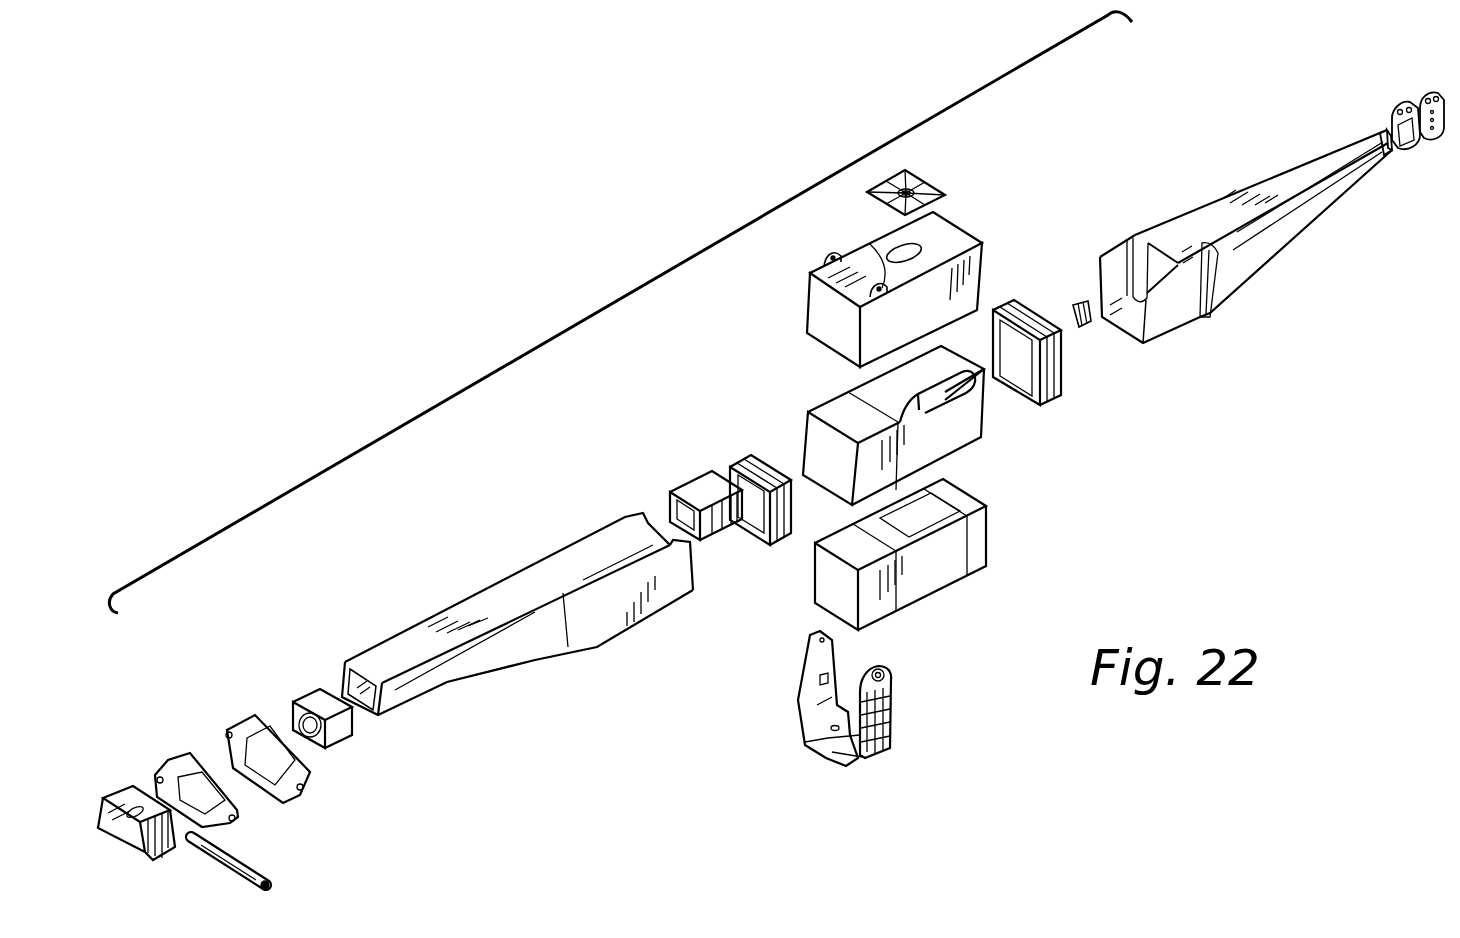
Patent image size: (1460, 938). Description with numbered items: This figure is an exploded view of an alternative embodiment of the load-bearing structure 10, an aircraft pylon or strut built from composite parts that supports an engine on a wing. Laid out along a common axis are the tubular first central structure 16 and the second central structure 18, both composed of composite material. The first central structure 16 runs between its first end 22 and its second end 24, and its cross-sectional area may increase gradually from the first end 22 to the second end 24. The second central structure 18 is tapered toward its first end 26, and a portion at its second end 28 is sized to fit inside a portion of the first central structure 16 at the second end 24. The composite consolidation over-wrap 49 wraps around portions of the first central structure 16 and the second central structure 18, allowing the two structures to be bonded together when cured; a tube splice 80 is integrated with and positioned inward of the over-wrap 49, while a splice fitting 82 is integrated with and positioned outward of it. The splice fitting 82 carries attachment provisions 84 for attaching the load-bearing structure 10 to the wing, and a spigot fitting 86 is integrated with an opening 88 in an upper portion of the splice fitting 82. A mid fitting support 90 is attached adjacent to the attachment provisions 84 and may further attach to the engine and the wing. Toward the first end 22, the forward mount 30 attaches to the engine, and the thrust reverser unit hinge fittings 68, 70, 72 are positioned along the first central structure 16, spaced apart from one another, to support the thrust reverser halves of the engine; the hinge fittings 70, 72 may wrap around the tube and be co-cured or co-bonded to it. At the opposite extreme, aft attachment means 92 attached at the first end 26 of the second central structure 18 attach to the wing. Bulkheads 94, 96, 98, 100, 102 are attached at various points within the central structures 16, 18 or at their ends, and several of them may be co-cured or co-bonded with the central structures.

The load-bearing structure 10 is at (633, 293).
The first central structure 16 is at (495, 592).
The second central structure 18 is at (1287, 172).
The first end of first central structure 22 is at (341, 680).
The second end of first central structure 24 is at (695, 578).
The first end of second central structure 26 is at (1392, 150).
The second end of second central structure 28 is at (1097, 268).
The forward mount 30 is at (130, 785).
The composite consolidation over-wrap 49 is at (968, 438).
The thrust reverser unit hinge fitting 68 is at (248, 873).
The thrust reverser unit hinge fitting 70 is at (177, 762).
The thrust reverser unit hinge fitting 72 is at (248, 720).
The tube splice 80 is at (985, 540).
The splice fitting 82 is at (815, 318).
The attachment provisions 84 is at (882, 270).
The spigot fitting 86 is at (912, 178).
The opening 88 is at (912, 250).
The mid fitting support 90 is at (878, 757).
The aft attachment means 92 is at (1444, 54).
The bulkhead 94 is at (340, 743).
The bulkhead 96 is at (688, 492).
The bulkhead 98 is at (743, 452).
The bulkhead 100 is at (1018, 386).
The bulkhead 102 is at (1080, 306).